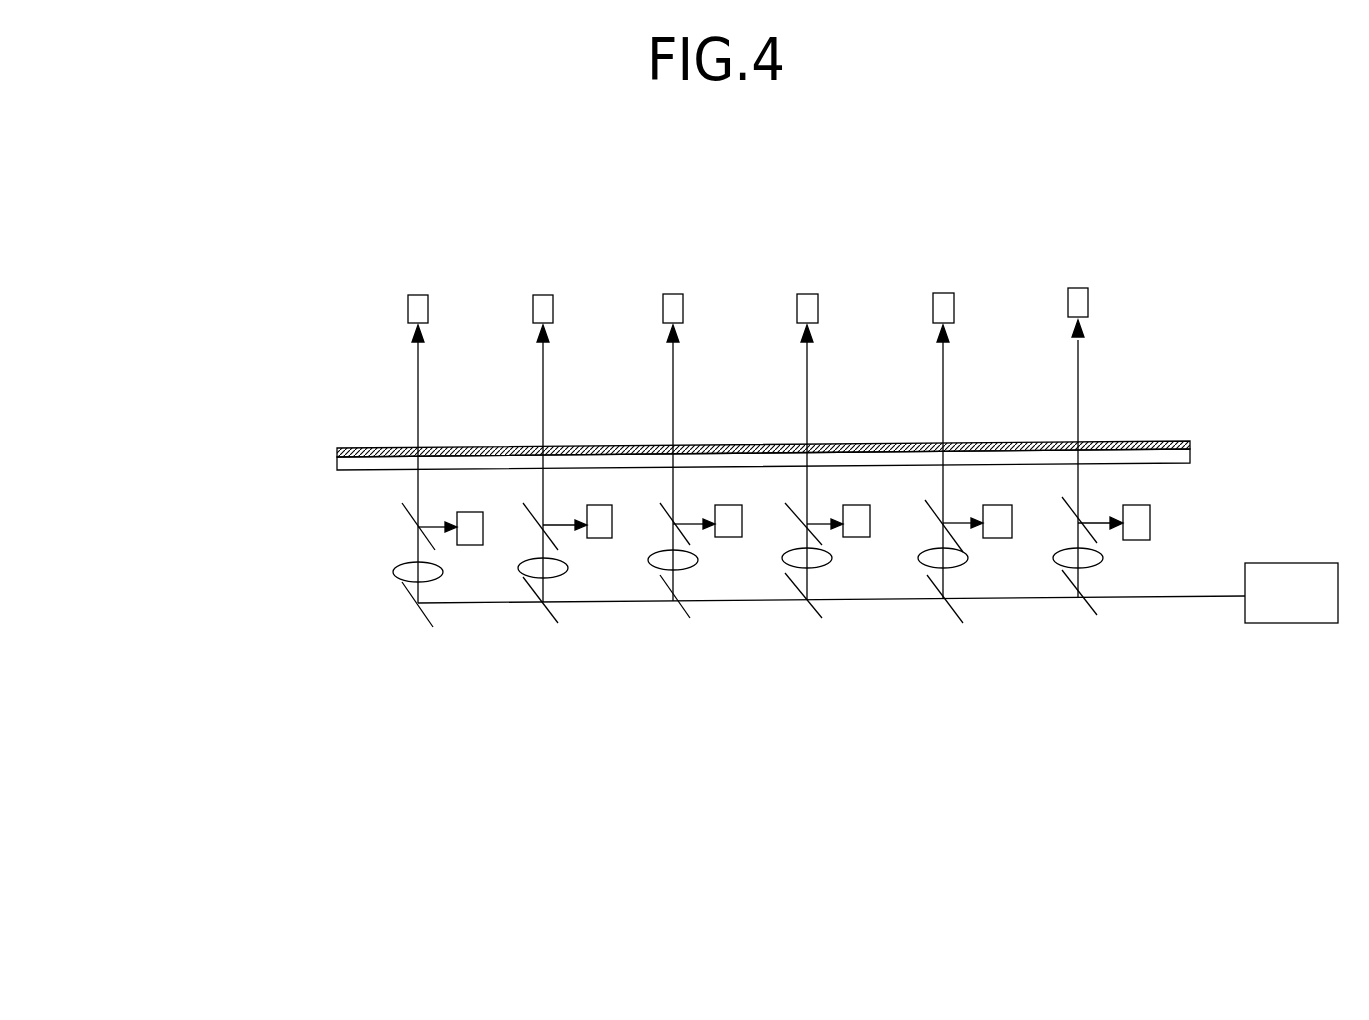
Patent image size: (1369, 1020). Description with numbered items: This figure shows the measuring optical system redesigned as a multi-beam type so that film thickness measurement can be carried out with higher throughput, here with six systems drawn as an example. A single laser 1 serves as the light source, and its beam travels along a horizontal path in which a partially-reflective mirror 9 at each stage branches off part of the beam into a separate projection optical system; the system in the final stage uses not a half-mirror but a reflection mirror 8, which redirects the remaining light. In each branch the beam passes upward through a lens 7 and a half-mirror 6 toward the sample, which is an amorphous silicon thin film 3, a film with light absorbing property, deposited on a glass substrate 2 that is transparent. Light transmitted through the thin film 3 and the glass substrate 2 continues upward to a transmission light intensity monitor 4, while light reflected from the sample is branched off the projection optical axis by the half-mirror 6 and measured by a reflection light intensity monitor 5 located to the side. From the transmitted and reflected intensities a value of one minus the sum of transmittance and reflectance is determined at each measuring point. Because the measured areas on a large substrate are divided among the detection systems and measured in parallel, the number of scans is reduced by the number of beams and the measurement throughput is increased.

The laser 1 is at (1217, 668).
The glass substrate 2 is at (661, 395).
The amorphous silicon thin film 3 is at (703, 363).
The transmission light intensity monitor 4 is at (683, 251).
The reflection light intensity monitor 5 is at (784, 670).
The half-mirror 6 is at (675, 580).
The lens 7 is at (748, 710).
The reflection mirror 8 is at (661, 709).
The partially-reflective mirror 9 is at (831, 626).